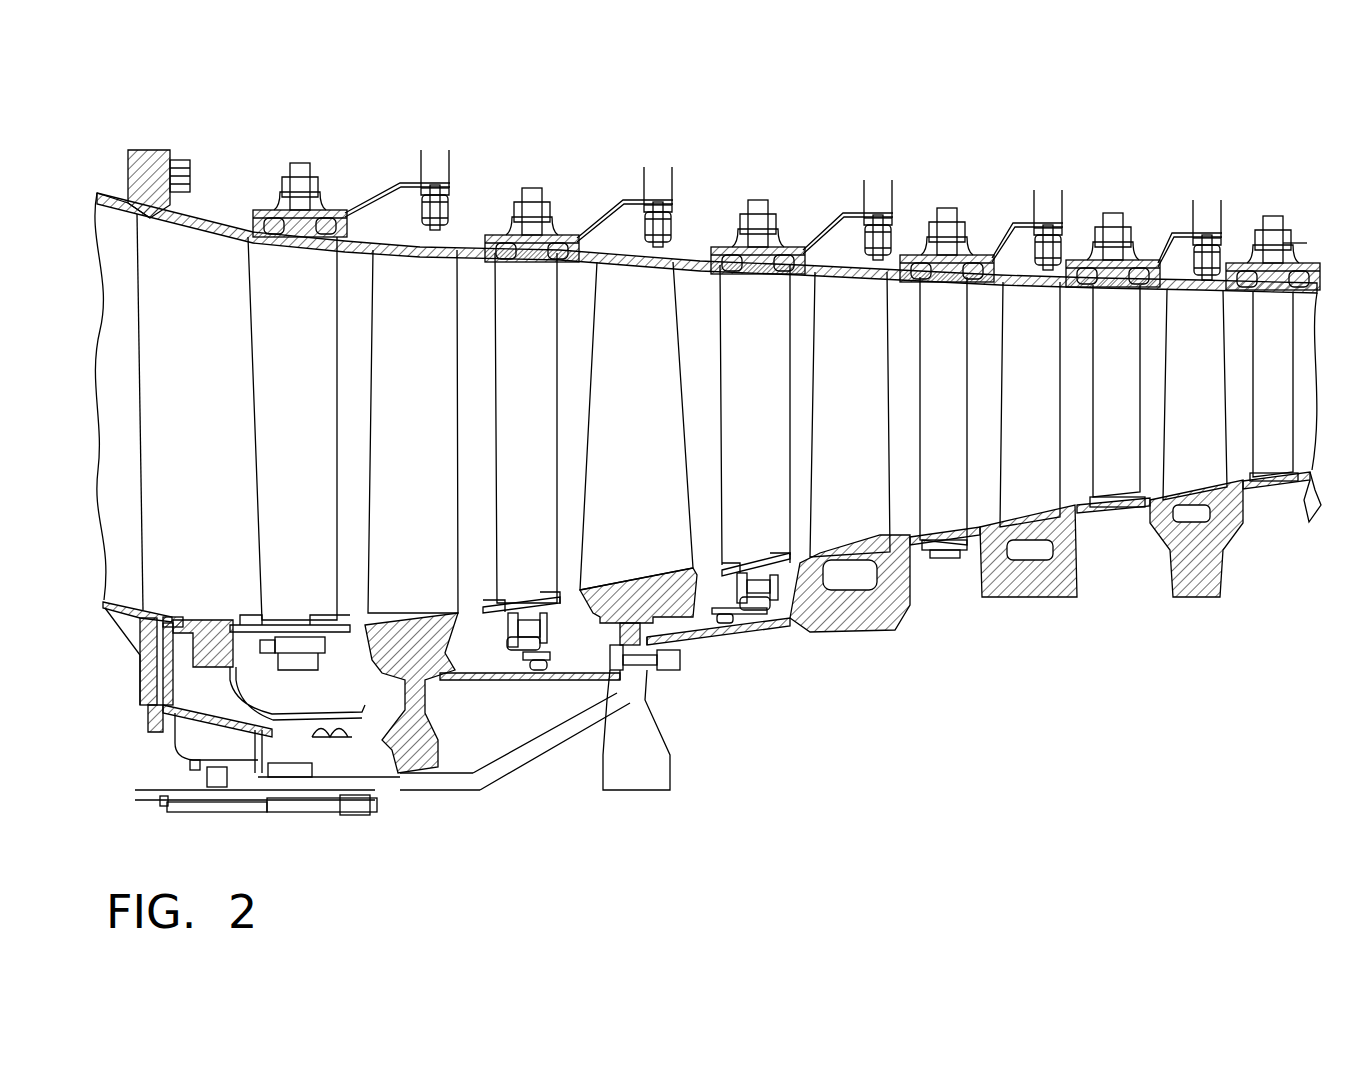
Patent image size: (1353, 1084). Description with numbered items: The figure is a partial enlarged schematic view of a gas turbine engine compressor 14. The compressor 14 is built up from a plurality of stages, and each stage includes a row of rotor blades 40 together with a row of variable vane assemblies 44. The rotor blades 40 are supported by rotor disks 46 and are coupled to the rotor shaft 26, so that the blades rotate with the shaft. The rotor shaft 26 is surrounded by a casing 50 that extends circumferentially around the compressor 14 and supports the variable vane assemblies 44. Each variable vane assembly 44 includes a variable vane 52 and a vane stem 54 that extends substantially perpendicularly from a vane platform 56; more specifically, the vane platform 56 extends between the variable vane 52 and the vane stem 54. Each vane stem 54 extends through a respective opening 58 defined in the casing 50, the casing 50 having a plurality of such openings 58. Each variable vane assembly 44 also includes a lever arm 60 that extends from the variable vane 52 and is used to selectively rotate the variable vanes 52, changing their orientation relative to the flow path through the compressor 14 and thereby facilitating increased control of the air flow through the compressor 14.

The compressor 14 is at (230, 88).
The rotor shaft 26 is at (447, 792).
The rotor blades 40 is at (402, 504).
The variable vane assemblies 44 is at (284, 160).
The rotor disks 46 is at (440, 745).
The casing 50 is at (140, 172).
The variable vane 52 is at (276, 388).
The vane stem 54 is at (297, 170).
The vane platform 56 is at (330, 245).
The opening 58 is at (275, 240).
The lever arm 60 is at (353, 207).